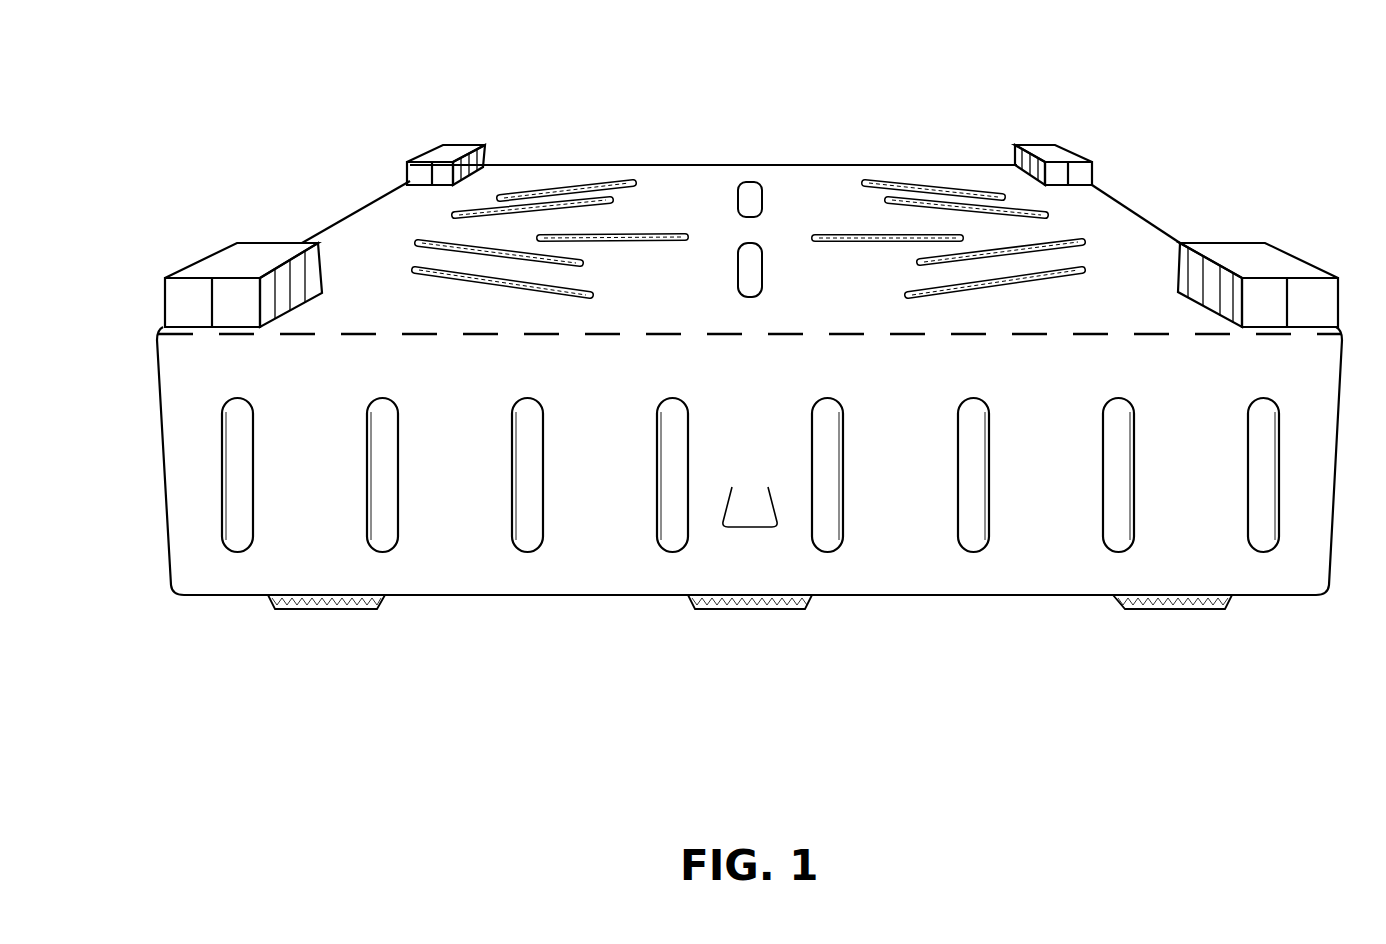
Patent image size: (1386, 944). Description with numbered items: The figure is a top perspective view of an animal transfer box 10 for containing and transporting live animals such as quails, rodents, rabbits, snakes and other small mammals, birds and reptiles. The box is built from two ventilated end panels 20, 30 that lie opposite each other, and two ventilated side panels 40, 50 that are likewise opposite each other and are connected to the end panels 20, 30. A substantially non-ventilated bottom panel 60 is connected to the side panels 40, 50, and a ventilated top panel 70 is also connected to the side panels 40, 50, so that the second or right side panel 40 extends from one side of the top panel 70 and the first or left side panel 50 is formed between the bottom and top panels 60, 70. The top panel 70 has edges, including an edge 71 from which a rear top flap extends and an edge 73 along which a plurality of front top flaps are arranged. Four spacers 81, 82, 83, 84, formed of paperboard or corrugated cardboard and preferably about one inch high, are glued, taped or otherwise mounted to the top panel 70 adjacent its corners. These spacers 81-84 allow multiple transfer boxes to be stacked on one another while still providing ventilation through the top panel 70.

The animal transfer box 10 is at (1049, 92).
The ventilated end panel 20 is at (923, 152).
The ventilated end panel 30 is at (891, 546).
The second or right side panel 40 is at (332, 200).
The first or left side panel 50 is at (1201, 212).
The bottom panel 60 is at (547, 612).
The top panel 70 is at (691, 302).
The edge of top panel 71 is at (358, 334).
The edge of top panel 73 is at (627, 164).
The spacer 81 is at (1262, 263).
The spacer 82 is at (1073, 148).
The spacer 83 is at (448, 145).
The spacer 84 is at (229, 261).